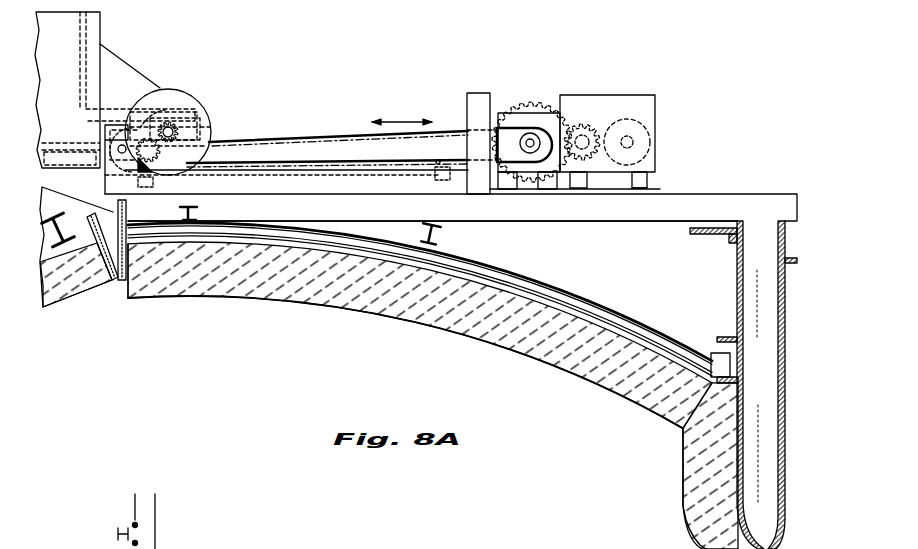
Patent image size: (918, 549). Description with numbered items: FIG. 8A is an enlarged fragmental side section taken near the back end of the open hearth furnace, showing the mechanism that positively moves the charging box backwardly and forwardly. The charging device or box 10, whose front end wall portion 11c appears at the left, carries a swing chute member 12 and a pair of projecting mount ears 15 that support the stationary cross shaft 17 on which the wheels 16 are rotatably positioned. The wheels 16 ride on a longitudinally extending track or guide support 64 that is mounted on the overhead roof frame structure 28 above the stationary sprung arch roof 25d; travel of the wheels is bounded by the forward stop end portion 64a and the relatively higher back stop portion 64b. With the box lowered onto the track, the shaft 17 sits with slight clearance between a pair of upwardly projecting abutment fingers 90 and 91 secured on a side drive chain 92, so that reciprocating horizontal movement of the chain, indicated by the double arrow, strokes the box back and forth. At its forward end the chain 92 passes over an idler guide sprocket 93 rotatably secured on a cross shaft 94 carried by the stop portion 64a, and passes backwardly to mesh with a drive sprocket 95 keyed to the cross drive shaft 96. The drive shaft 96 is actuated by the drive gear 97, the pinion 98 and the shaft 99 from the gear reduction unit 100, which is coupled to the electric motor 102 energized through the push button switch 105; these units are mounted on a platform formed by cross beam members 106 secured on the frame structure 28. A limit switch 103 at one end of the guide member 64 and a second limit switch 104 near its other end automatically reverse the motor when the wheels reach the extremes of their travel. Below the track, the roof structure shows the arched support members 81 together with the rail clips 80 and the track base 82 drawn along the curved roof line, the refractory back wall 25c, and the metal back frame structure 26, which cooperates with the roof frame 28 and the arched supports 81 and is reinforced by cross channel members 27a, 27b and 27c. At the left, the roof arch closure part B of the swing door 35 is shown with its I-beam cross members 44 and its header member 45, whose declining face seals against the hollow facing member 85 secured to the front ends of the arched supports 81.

The charging device or box 10 is at (118, 21).
The front end wall portion 11c is at (80, 25).
The swing chute member 12 is at (105, 138).
The mount ears 15 is at (116, 57).
The wheels 16 is at (188, 90).
The cross shaft 17 is at (200, 117).
The forward stop end portions 64a is at (104, 136).
The abutment fingers 90 is at (212, 128).
The abutment fingers 91 is at (140, 128).
The drive chains 92 is at (333, 134).
The idler guide sprockets 93 is at (151, 155).
The cross shaft 94 is at (122, 153).
The limit switch 103 is at (153, 185).
The track or guide supports 64 is at (357, 186).
The back stop portions 64b is at (468, 108).
The second limit switch 104 is at (437, 181).
The drive sprockets 95 is at (503, 118).
The cross drive shaft 96 is at (529, 153).
The drive gear 97 is at (520, 106).
The pinion 98 is at (581, 126).
The shaft 99 is at (587, 162).
The gear reduction unit 100 is at (656, 101).
The electric motor 102 is at (655, 133).
The cross beam members 106 is at (648, 180).
The roof frame structure 28 is at (622, 226).
The arched support members 81 is at (604, 290).
The rail clip 80 is at (198, 209).
The track base 82 is at (543, 353).
The sprung arch roof 25d is at (389, 313).
The refractory back wall 25c is at (684, 540).
The back frame structure 26 is at (773, 473).
The cross channel member 27a is at (723, 336).
The cross channel member 27b is at (789, 264).
The cross channel member 27c is at (692, 236).
The cross members 44 is at (57, 216).
The header member 45 is at (115, 281).
The hollow facing member 85 is at (125, 282).
The roof arch closure part B is at (50, 305).
The swing door 35 is at (74, 296).
The push button switch 105 is at (127, 527).